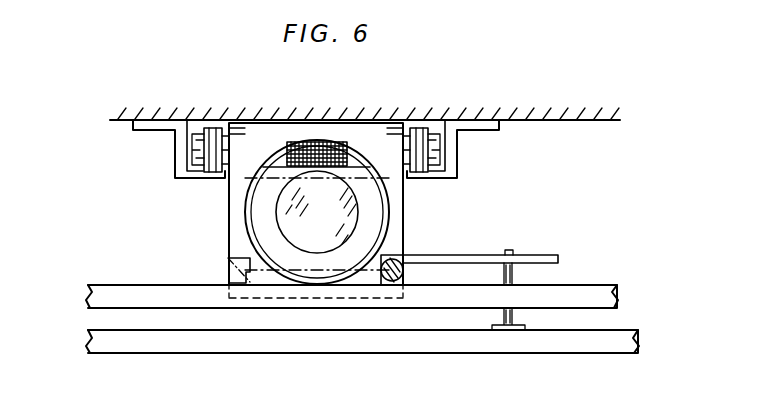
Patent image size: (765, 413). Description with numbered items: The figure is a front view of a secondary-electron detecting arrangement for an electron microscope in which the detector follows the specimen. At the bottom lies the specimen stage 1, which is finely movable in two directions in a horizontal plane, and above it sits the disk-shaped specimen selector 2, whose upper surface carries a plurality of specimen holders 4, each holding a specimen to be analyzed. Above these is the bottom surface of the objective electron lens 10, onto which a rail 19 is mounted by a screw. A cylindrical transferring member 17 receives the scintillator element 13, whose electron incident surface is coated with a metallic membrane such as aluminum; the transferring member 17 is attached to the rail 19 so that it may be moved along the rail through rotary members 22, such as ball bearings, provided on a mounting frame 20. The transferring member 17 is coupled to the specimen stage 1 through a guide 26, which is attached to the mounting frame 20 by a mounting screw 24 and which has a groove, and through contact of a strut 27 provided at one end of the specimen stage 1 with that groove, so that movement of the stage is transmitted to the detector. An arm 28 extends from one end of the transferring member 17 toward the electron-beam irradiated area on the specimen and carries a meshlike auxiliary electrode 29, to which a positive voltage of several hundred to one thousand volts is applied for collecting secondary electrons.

The specimen stage 1 is at (592, 348).
The disk-shaped specimen selector 2 is at (614, 290).
The specimen holder 4 is at (228, 258).
The objective electron lens 10 is at (432, 98).
The scintillator element 13 is at (230, 283).
The cylindrical transferring member 17 is at (243, 196).
The rail 19 is at (178, 148).
The mounting frame 20 is at (405, 216).
The rotary member 22 is at (207, 130).
The mounting screw 24 is at (405, 264).
The guide 26 is at (548, 256).
The strut 27 is at (514, 275).
The arm 28 is at (287, 150).
The meshlike auxiliary electrode 29 is at (317, 150).